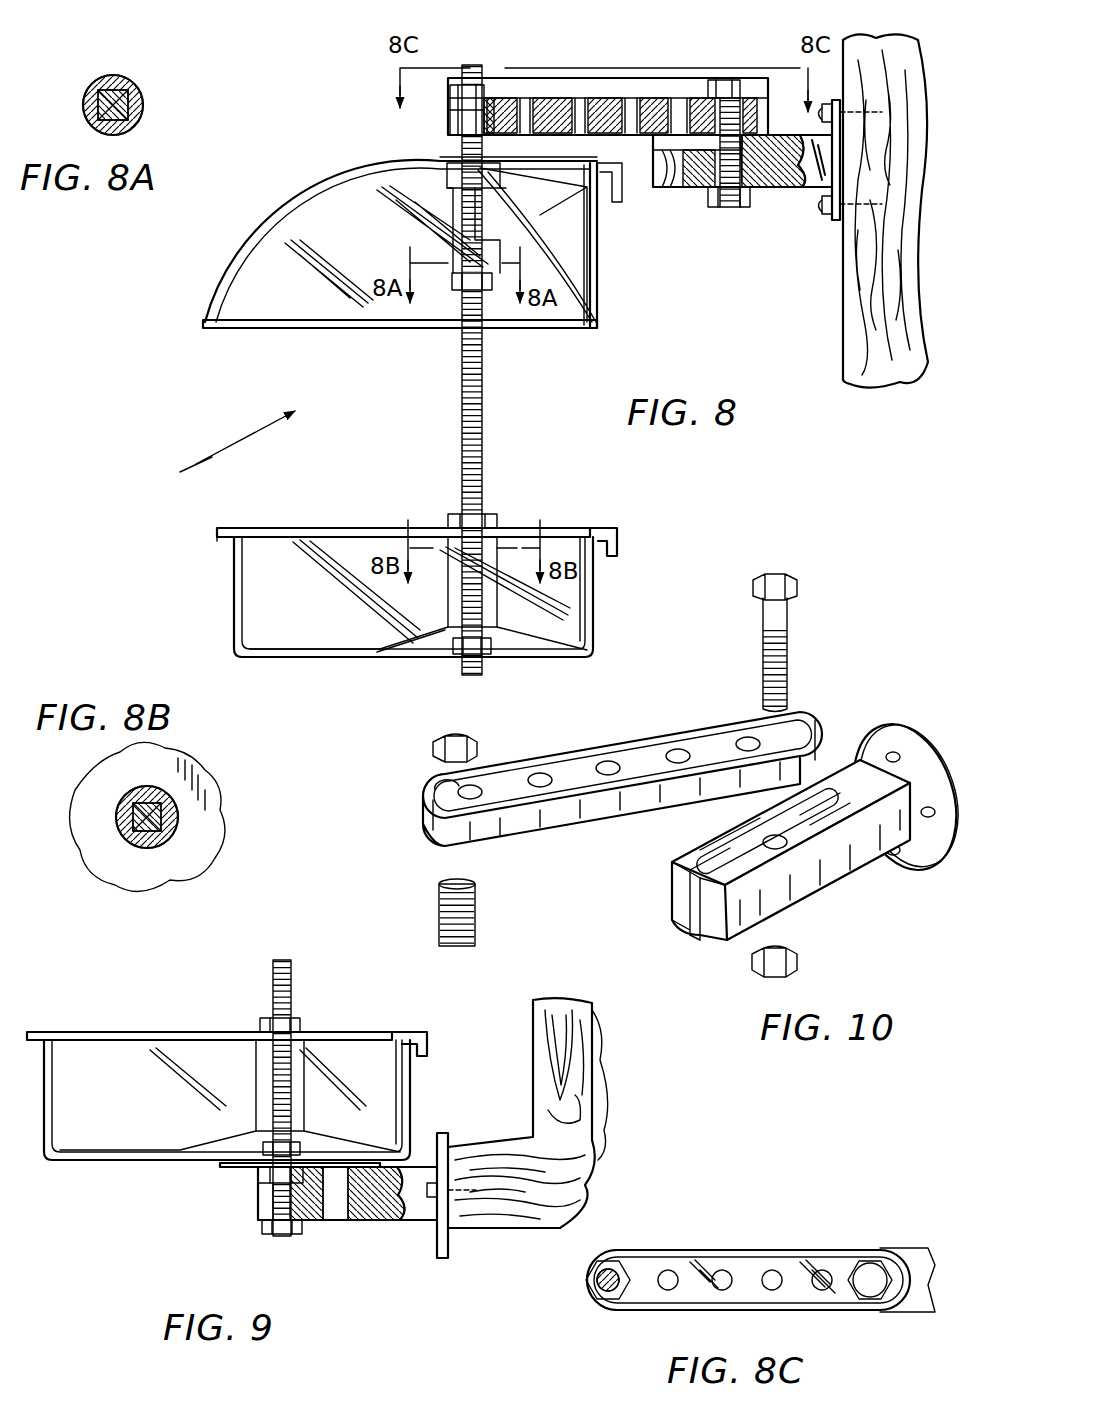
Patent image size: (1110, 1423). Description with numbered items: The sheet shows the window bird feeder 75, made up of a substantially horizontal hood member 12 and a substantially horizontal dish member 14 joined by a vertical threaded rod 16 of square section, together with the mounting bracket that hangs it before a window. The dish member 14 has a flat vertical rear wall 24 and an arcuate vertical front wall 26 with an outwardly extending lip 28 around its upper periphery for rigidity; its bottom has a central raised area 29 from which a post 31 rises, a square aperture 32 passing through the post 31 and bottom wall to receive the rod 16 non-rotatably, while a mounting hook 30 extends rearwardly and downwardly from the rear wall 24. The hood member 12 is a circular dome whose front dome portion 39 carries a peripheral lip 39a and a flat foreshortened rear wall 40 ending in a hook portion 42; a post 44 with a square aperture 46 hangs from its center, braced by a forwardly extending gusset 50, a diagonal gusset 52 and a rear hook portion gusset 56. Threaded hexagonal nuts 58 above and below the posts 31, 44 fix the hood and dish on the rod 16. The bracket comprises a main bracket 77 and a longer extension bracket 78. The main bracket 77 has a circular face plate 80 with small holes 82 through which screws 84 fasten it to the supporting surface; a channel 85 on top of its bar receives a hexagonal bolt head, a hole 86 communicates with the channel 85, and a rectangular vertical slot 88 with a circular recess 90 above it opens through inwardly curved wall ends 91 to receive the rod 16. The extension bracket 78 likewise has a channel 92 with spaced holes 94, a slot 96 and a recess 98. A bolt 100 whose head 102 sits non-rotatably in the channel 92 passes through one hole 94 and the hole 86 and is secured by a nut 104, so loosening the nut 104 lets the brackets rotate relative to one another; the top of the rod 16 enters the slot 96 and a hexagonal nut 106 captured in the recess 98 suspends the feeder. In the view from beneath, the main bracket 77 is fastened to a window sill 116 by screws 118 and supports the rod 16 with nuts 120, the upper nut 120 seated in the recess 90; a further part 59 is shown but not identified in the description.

In FIG. 8, the hood member 12 is at (281, 268).
In FIG. 8, the dish member 14 is at (232, 612).
In FIG. 9, the dish member 14 is at (118, 1165).
In FIG. 8A, the elongated rod 16 is at (93, 82).
In FIG. 8, the elongated rod 16 is at (483, 78).
In FIG. 8B, the elongated rod 16 is at (137, 832).
In FIG. 10, the elongated rod 16 is at (440, 895).
In FIG. 9, the elongated rod 16 is at (286, 972).
In FIG. 8C, the elongated rod 16 is at (605, 1291).
In FIG. 8, the rear wall 24 is at (595, 628).
In FIG. 9, the rear wall 24 is at (411, 1086).
In FIG. 8, the front wall 26 is at (235, 582).
In FIG. 8, the lip 28 is at (215, 533).
In FIG. 9, the lip 28 is at (30, 1032).
In FIG. 8, the raised area 29 is at (525, 652).
In FIG. 8B, the raised area 29 is at (170, 862).
In FIG. 9, the raised area 29 is at (215, 1160).
In FIG. 8, the dish member mounting hook 30 is at (447, 590).
In FIG. 8B, the dish member mounting hook 30 is at (178, 820).
In FIG. 9, the dish member mounting hook 30 is at (256, 1070).
In FIG. 8, the post 31 is at (613, 530).
In FIG. 9, the post 31 is at (425, 1032).
In FIG. 8B, the aperture 32 is at (160, 795).
In FIG. 8, the front dome portion 39 is at (323, 218).
In FIG. 8, the peripheral lip 39a is at (233, 326).
In FIG. 8, the rear wall 40 is at (599, 300).
In FIG. 8, the hook portion 42 is at (618, 204).
In FIG. 8A, the post 44 is at (144, 103).
In FIG. 8, the post 44 is at (466, 258).
In FIG. 8A, the aperture 46 is at (124, 95).
In FIG. 8, the forwardly extending gusset 50 is at (433, 192).
In FIG. 8, the gusset 52 is at (545, 258).
In FIG. 8, the rear hook portion gusset 56 is at (565, 172).
In FIG. 8, the threaded hexagonal nuts 58 is at (489, 291).
In FIG. 9, the threaded hexagonal nuts 58 is at (301, 1025).
In FIG. 9, the plate 59 is at (260, 1168).
In FIG. 8, the feeder 75 is at (197, 449).
In FIG. 8, the main bracket 77 is at (806, 184).
In FIG. 10, the main bracket 77 is at (822, 862).
In FIG. 9, the main bracket 77 is at (362, 1222).
In FIG. 8C, the main bracket 77 is at (913, 1252).
In FIG. 8, the extension bracket 78 is at (620, 80).
In FIG. 8C, the extension bracket 78 is at (693, 1250).
In FIG. 8, the face plate 80 is at (840, 150).
In FIG. 10, the face plate 80 is at (913, 758).
In FIG. 9, the face plate 80 is at (447, 1132).
In FIG. 10, the holes 82 is at (893, 752).
In FIG. 8, the screws 84 is at (832, 108).
In FIG. 8, the channel 85 is at (752, 140).
In FIG. 10, the channel 85 is at (705, 865).
In FIG. 9, the channel 85 is at (322, 1168).
In FIG. 8, the hole 86 is at (733, 205).
In FIG. 10, the hole 86 is at (780, 850).
In FIG. 9, the hole 86 is at (303, 1200).
In FIG. 8, the slot 88 is at (676, 184).
In FIG. 10, the slot 88 is at (680, 925).
In FIG. 9, the slot 88 is at (270, 1222).
In FIG. 8, the recess 90 is at (672, 150).
In FIG. 10, the recess 90 is at (692, 872).
In FIG. 10, the inwardly curved side wall ends 91 is at (710, 945).
In FIG. 8, the channel 92 is at (580, 92).
In FIG. 10, the channel 92 is at (585, 770).
In FIG. 8C, the channel 92 is at (745, 1262).
In FIG. 8, the holes 94 is at (578, 110).
In FIG. 10, the holes 94 is at (600, 778).
In FIG. 8C, the holes 94 is at (782, 1272).
In FIG. 8, the slot 96 is at (452, 117).
In FIG. 10, the slot 96 is at (452, 790).
In FIG. 8C, the slot 96 is at (592, 1296).
In FIG. 10, the recess 98 is at (440, 790).
In FIG. 8, the bolt 100 is at (719, 118).
In FIG. 10, the bolt 100 is at (782, 632).
In FIG. 8, the head 102 is at (728, 80).
In FIG. 10, the head 102 is at (792, 582).
In FIG. 8C, the head 102 is at (872, 1262).
In FIG. 8, the nut 104 is at (752, 210).
In FIG. 10, the nut 104 is at (821, 964).
In FIG. 8, the hexagonal nut 106 is at (492, 96).
In FIG. 10, the hexagonal nut 106 is at (466, 755).
In FIG. 8C, the hexagonal nut 106 is at (622, 1270).
In FIG. 9, the sill 116 is at (500, 1228).
In FIG. 9, the screws 118 is at (428, 1197).
In FIG. 9, the threaded hexagonal nuts 120 is at (265, 1228).